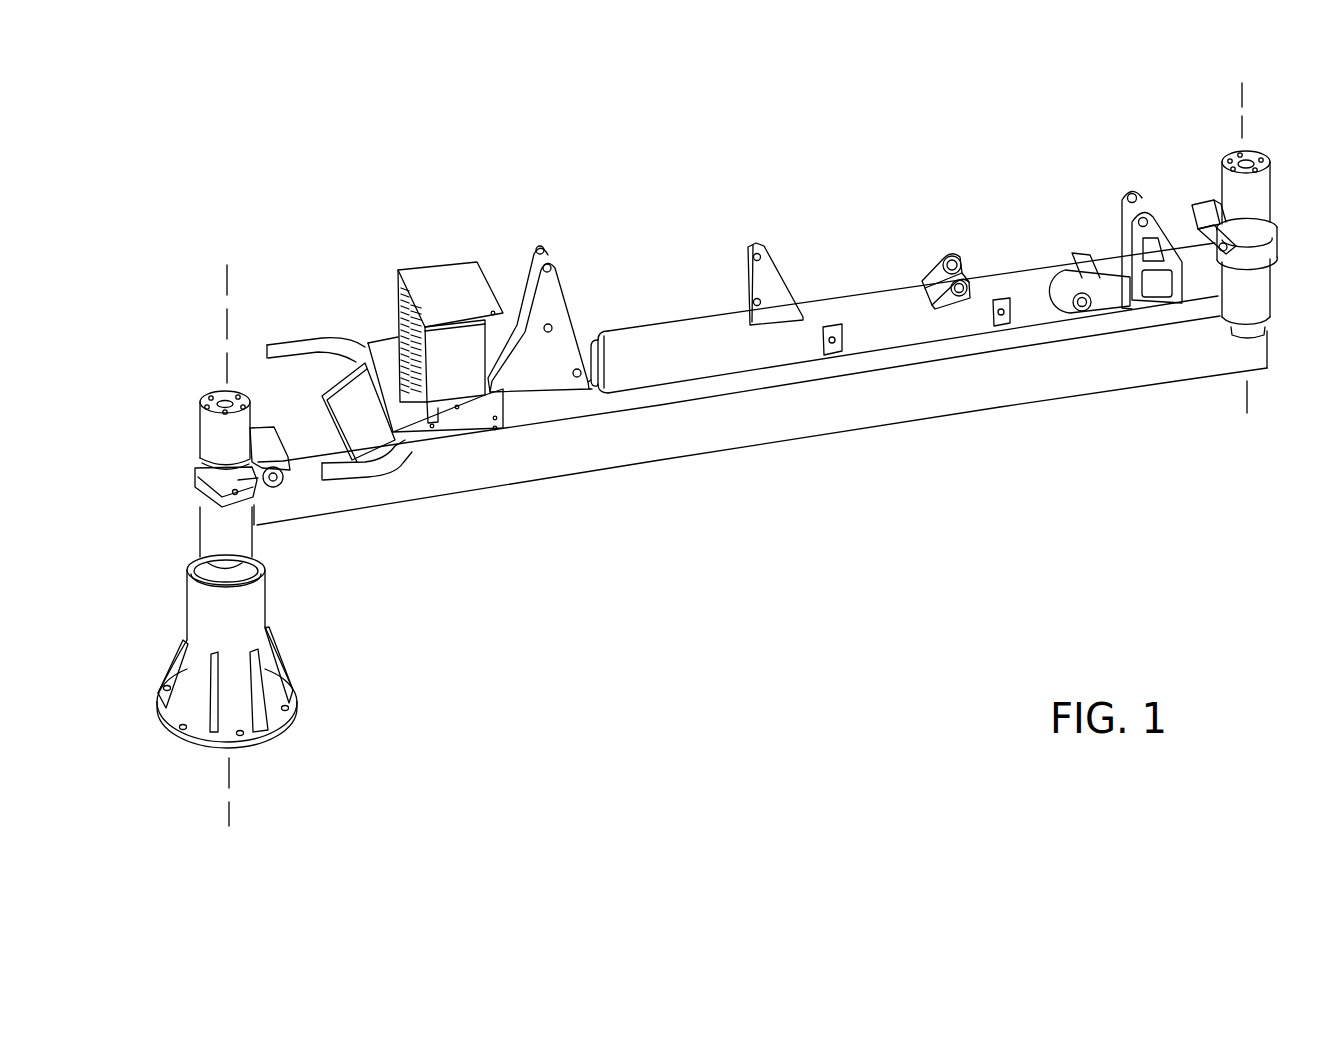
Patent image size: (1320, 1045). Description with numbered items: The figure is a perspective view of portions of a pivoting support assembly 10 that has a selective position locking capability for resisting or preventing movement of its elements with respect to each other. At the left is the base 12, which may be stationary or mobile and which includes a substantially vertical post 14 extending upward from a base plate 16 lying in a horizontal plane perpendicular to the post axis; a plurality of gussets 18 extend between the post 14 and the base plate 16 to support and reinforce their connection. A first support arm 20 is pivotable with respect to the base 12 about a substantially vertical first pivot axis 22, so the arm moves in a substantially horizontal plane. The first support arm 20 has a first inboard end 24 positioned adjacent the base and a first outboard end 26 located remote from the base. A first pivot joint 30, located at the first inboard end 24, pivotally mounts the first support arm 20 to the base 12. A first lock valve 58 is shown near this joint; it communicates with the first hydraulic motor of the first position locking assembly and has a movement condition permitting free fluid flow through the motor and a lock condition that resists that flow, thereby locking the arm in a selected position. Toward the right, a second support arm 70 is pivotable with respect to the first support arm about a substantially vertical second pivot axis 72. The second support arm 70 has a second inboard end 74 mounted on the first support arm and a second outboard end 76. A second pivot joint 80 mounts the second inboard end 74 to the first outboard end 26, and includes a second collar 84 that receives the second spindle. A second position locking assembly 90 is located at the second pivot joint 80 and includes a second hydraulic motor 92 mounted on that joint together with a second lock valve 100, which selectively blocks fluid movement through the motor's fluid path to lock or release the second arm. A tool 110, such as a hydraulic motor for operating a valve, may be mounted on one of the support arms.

The pivoting support assembly 10 is at (900, 134).
The base 12 is at (308, 649).
The post 14 is at (261, 600).
The base plate 16 is at (258, 742).
The gussets 18 is at (275, 679).
The first support arm 20 is at (726, 474).
The first pivot axis 22 is at (229, 271).
The first inboard end 24 is at (264, 512).
The first outboard end 26 is at (1216, 365).
The first pivot joint 30 is at (192, 374).
The first lock valve 58 is at (275, 444).
The second support arm 70 is at (1176, 178).
The second pivot axis 72 is at (1248, 400).
The second inboard end 74 is at (1213, 284).
The second outboard end 76 is at (1110, 262).
The second pivot joint 80 is at (1265, 108).
The second collar 84 is at (1254, 303).
The second position locking assembly 90 is at (1180, 205).
The second hydraulic motor 92 is at (1266, 188).
The second lock valve 100 is at (1200, 200).
The tool 110 is at (448, 262).